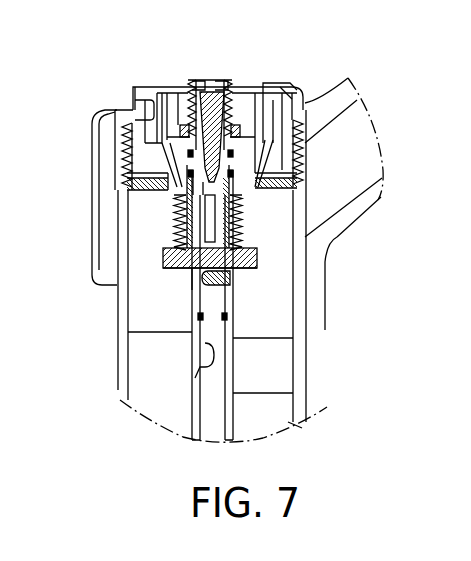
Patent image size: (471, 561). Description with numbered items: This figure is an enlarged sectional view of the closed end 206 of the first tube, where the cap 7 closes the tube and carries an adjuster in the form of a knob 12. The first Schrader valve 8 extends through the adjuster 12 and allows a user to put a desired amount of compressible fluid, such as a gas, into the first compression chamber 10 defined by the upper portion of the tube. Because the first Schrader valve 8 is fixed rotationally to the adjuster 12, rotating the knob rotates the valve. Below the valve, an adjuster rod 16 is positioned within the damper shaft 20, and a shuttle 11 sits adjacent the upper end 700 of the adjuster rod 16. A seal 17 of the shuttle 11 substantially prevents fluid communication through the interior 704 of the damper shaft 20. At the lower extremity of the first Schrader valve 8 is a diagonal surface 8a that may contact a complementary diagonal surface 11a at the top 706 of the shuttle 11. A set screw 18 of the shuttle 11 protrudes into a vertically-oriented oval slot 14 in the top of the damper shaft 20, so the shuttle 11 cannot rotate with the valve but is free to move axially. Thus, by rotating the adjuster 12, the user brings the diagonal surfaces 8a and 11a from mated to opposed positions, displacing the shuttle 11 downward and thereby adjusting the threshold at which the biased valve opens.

The closed end 206 is at (150, 75).
The first Schrader valve 8 is at (234, 80).
The knob 12 is at (294, 80).
The cap 7 is at (283, 153).
The diagonal surface 8a is at (200, 223).
The top of the shuttle 706 is at (190, 230).
The upper end 700 is at (192, 277).
The shuttle 11 is at (197, 313).
The interior of the damper shaft 704 is at (200, 346).
The complementary diagonal surface 11a is at (232, 266).
The set screw 18 is at (232, 290).
The vertically-oriented oval slot 14 is at (232, 320).
The seal 17 is at (233, 338).
The damper shaft 20 is at (232, 393).
The first compression chamber 10 is at (158, 388).
The adjuster rod 16 is at (197, 403).